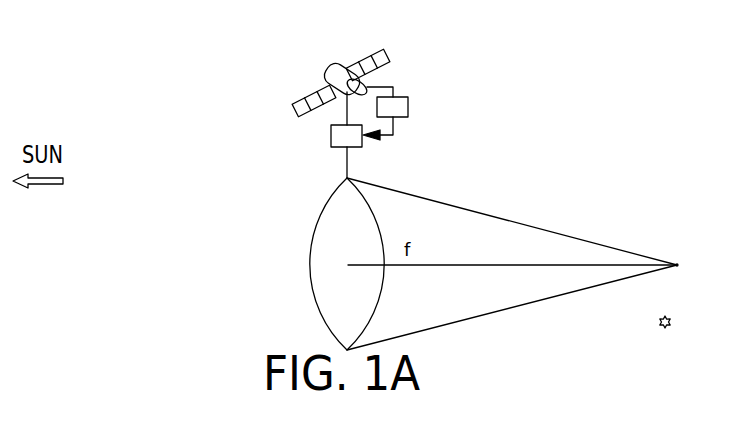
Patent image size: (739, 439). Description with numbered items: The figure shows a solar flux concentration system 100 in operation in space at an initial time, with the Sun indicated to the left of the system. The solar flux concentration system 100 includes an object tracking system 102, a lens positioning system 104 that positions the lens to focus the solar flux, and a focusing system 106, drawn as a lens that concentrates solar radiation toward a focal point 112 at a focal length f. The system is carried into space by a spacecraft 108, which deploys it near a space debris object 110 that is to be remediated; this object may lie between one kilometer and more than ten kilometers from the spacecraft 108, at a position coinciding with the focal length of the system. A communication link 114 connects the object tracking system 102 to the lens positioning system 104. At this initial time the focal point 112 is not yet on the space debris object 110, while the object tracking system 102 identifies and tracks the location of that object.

The solar flux concentration system 100 is at (246, 79).
The object tracking system 102 is at (408, 107).
The lens positioning system 104 is at (331, 137).
The focusing system 106 is at (323, 318).
The spacecraft 108 is at (357, 55).
The space debris object 110 is at (661, 328).
The focal point 112 is at (679, 261).
The communication link 114 is at (397, 130).